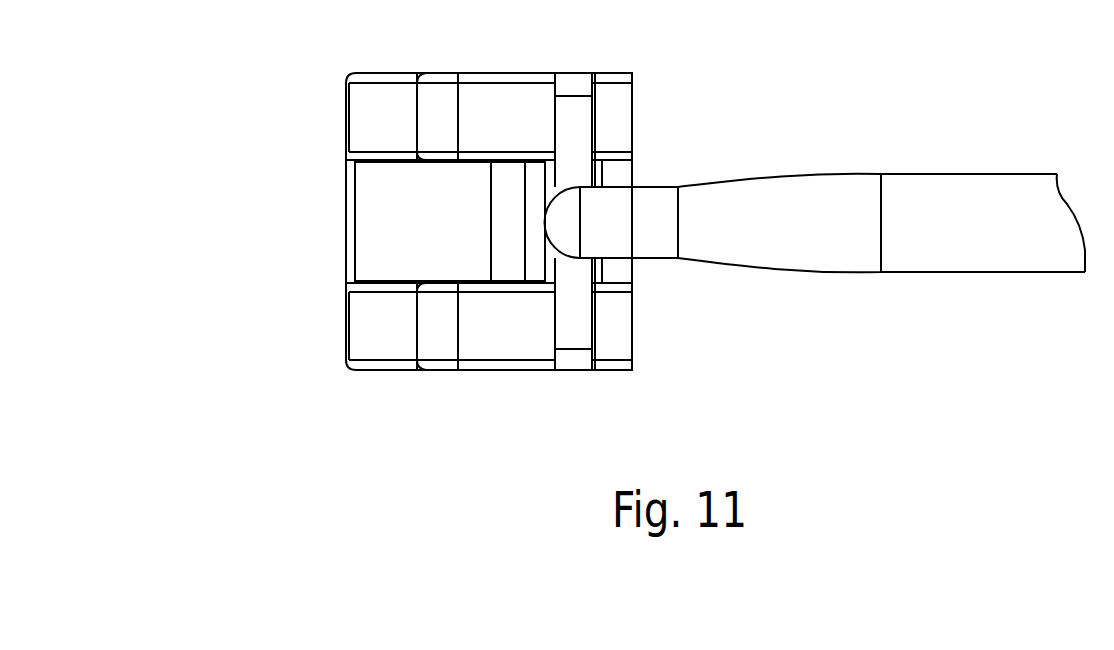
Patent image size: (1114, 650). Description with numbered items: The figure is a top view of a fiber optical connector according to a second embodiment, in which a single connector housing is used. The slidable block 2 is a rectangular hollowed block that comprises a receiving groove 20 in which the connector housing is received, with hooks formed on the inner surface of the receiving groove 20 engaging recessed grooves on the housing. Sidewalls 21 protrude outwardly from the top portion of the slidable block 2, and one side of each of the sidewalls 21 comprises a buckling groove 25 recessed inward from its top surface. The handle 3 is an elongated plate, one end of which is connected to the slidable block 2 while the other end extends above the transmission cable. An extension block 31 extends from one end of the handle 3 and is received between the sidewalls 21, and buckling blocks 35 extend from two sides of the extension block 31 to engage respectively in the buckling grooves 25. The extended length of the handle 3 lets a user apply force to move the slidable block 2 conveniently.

The slidable block 2 is at (346, 103).
The receiving groove 20 is at (405, 242).
The sidewall 21 is at (510, 337).
The buckling groove 25 is at (585, 82).
The buckling block 35 is at (578, 108).
The handle 3 is at (978, 174).
The extension block 31 is at (622, 195).